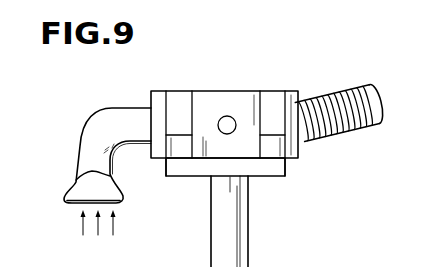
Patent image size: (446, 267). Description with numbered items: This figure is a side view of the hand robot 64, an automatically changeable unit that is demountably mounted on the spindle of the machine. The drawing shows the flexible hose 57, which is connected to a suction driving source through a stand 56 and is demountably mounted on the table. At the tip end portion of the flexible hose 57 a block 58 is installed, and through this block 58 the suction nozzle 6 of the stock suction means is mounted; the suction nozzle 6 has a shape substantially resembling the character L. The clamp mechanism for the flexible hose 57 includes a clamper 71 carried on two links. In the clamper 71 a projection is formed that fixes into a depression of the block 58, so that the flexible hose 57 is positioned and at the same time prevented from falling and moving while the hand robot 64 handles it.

The suction nozzle 6 is at (124, 195).
The stand 56 is at (241, 217).
The flexible hose 57 is at (334, 95).
The block 58 is at (170, 91).
The hand robot 64 is at (221, 83).
The clamper 71 is at (252, 92).